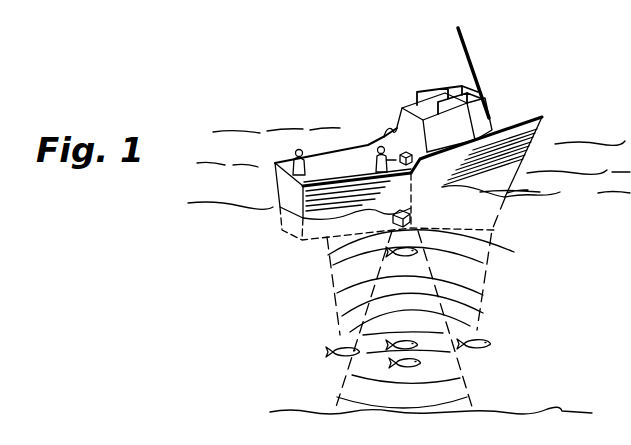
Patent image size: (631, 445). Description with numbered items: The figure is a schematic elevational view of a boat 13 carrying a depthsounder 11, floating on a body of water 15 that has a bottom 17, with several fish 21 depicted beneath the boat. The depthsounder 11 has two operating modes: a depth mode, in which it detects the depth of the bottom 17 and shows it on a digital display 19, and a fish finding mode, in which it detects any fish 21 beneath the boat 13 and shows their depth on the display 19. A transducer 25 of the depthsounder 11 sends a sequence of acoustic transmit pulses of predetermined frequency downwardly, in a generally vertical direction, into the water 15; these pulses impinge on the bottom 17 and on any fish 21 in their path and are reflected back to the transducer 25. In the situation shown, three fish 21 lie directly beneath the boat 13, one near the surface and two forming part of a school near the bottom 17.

The depthsounder 11 is at (430, 185).
The boat 13 is at (480, 116).
The body of water 15 is at (600, 227).
The bottom 17 is at (565, 411).
The digital display 19 is at (392, 133).
The fish 21 is at (492, 343).
The transducer 25 is at (514, 252).